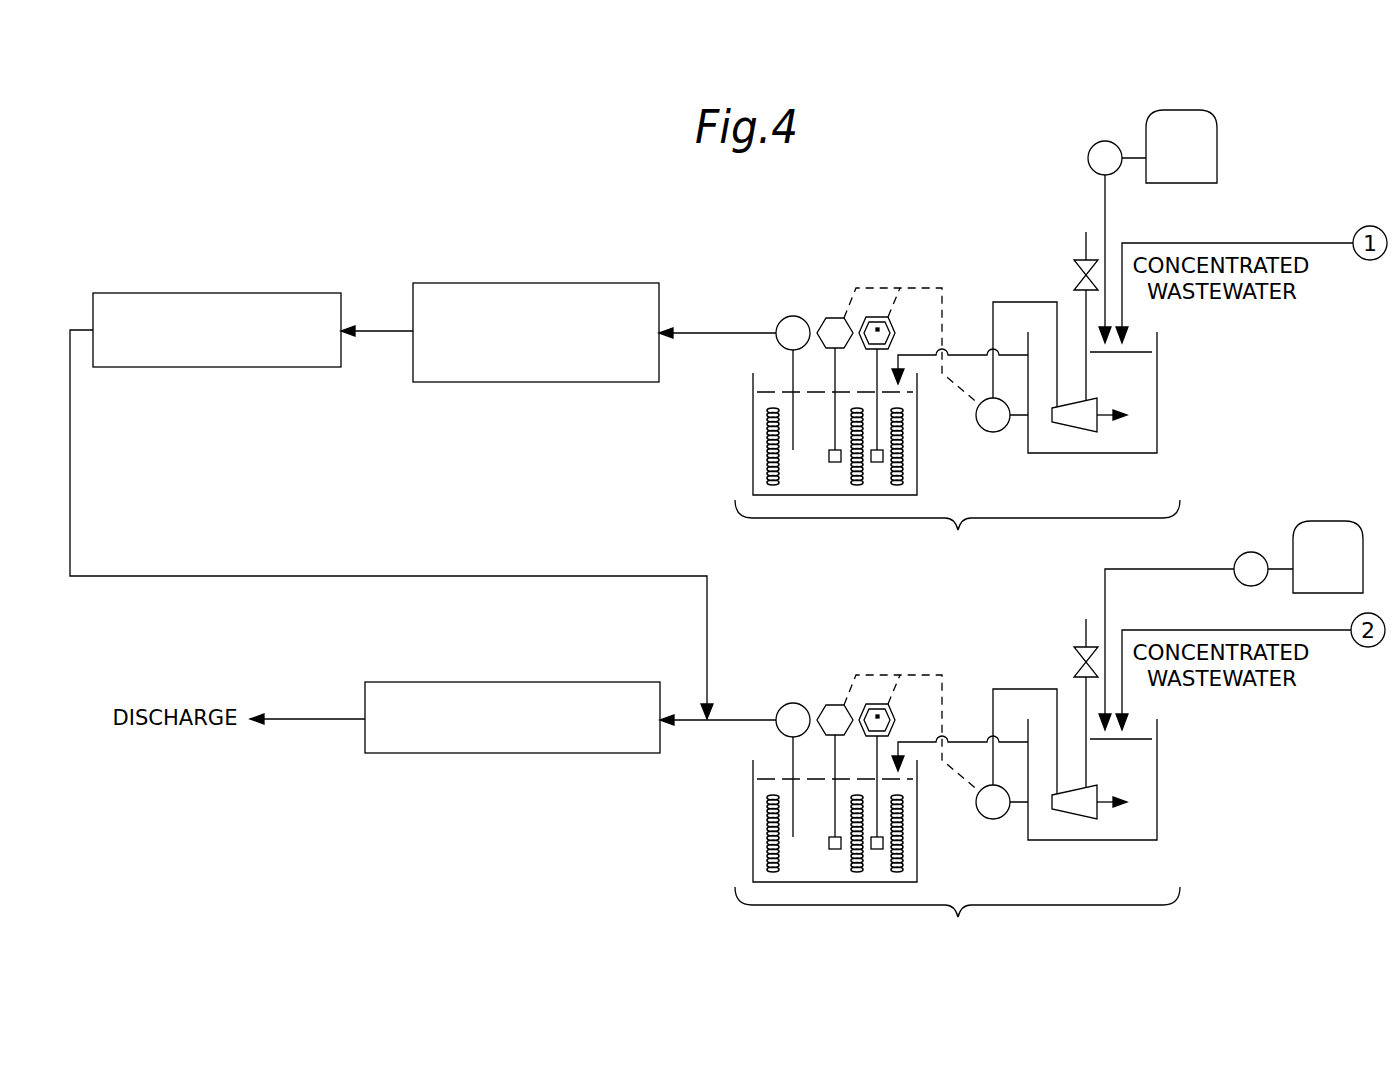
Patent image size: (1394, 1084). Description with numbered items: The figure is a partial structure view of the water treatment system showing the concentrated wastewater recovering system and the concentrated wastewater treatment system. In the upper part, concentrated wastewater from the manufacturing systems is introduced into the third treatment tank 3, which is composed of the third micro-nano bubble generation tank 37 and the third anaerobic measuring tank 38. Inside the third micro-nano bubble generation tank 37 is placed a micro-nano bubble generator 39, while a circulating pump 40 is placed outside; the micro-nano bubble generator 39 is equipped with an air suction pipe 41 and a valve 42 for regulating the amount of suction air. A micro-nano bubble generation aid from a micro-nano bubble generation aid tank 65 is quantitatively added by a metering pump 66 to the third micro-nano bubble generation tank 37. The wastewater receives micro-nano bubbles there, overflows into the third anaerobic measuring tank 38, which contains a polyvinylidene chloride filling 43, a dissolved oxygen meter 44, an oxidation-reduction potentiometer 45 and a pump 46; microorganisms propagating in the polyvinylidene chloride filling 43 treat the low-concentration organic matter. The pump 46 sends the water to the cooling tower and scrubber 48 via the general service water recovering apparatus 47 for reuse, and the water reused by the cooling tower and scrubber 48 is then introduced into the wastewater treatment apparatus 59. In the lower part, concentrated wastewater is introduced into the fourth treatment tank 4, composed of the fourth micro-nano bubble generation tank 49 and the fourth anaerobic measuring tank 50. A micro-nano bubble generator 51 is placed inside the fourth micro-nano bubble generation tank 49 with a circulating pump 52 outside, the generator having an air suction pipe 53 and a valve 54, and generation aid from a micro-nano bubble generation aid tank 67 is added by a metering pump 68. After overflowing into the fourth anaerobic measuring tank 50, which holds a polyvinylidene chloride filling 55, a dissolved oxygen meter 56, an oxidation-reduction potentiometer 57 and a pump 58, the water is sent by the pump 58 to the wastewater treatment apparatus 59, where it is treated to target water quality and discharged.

The third treatment tank 3 is at (957, 533).
The fourth treatment tank 4 is at (957, 920).
The third micro-nano bubble generation tank 37 is at (1160, 365).
The third anaerobic measuring tank 38 is at (753, 437).
The micro-nano bubble generator 39 is at (1105, 398).
The circulating pump 40 is at (993, 433).
The air suction pipe 41 is at (1086, 236).
The valve 42 is at (1077, 276).
The polyvinylidene chloride filling 43 is at (917, 430).
The dissolved oxygen meter 44 is at (826, 317).
The oxidation-reduction potentiometer 45 is at (890, 318).
The pump 46 is at (778, 317).
The general service water recovering apparatus 47 is at (538, 283).
The cooling tower and scrubber 48 is at (219, 293).
The fourth micro-nano bubble generation tank 49 is at (1122, 779).
The fourth anaerobic measuring tank 50 is at (805, 821).
The micro-nano bubble generator 51 is at (1099, 780).
The circulating pump 52 is at (1016, 785).
The air suction pipe 53 is at (1049, 698).
The valve 54 is at (1058, 660).
The polyvinylidene chloride filling 55 is at (870, 833).
The dissolved oxygen meter 56 is at (826, 747).
The oxidation-reduction potentiometer 57 is at (899, 766).
The pump 58 is at (771, 748).
The wastewater treatment apparatus 59 is at (508, 682).
The micro-nano bubble generation aid tank 65 is at (1183, 110).
The metering pump 66 is at (1094, 142).
The micro-nano bubble generation aid tank 67 is at (1298, 551).
The metering pump 68 is at (1196, 630).